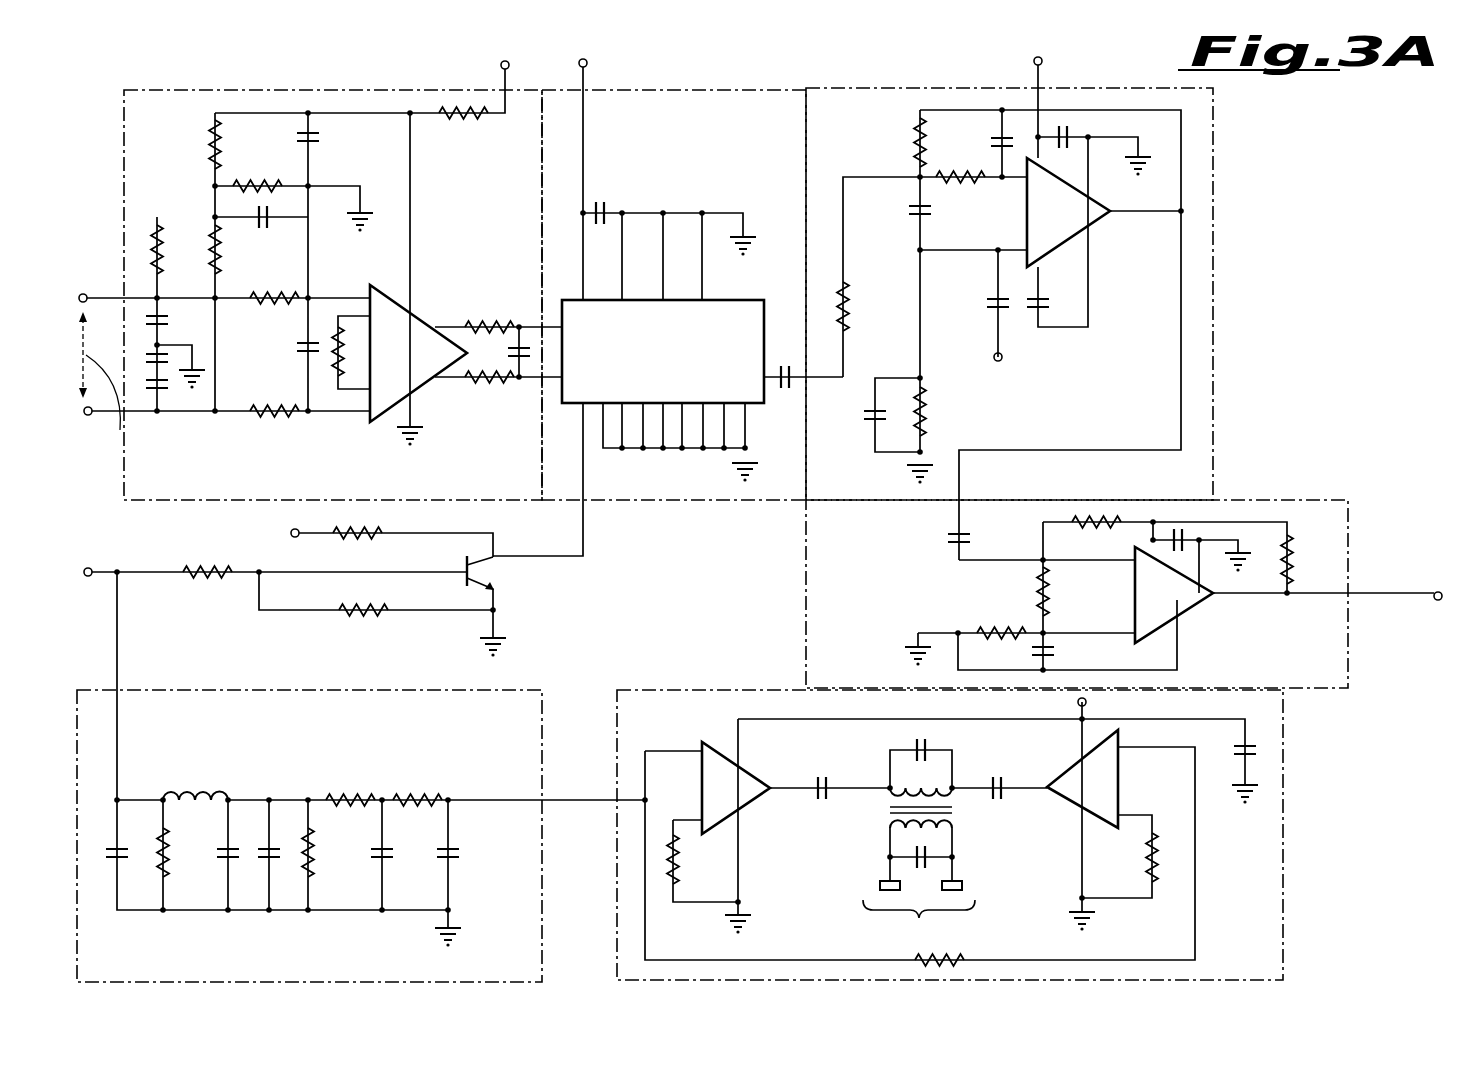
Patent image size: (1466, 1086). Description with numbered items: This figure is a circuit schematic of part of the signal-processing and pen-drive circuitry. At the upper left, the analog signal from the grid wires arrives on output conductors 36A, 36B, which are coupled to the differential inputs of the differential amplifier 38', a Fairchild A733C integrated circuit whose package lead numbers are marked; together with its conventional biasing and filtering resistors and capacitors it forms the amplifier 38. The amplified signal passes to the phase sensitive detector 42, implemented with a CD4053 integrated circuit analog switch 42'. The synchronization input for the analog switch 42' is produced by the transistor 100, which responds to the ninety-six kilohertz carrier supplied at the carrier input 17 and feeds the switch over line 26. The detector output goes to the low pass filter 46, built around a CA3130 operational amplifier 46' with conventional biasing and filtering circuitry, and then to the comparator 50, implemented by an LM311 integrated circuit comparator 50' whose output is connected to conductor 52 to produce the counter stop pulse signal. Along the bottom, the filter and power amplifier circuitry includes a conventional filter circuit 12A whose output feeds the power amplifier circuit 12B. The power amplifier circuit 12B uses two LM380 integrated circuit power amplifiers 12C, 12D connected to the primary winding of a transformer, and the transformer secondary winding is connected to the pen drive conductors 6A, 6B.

The output conductor 36A is at (87, 278).
The output conductor 36B is at (88, 426).
The amplifier 38 is at (320, 278).
The differential amplifier 38' is at (423, 353).
The phase sensitive detector 42 is at (692, 277).
The analog switch 42' is at (680, 333).
The low pass filter 46 is at (1009, 306).
The operational amplifier 46' is at (1061, 223).
The comparator 50 is at (1120, 594).
The integrated circuit comparator 50' is at (1174, 595).
The conductor 52 is at (1438, 590).
The 96 KC carrier input terminal 17 is at (90, 580).
The carrier reference line to multiplier 26 is at (556, 557).
The transistor 100 is at (500, 572).
The filter circuit 12A is at (506, 732).
The power amplifier circuit 12B is at (682, 732).
The pen drive operational amplifier 12C is at (752, 764).
The pen drive operational amplifier 12D is at (1069, 765).
The pen drive conductor 6A is at (962, 886).
The pen drive conductor 6B is at (880, 886).